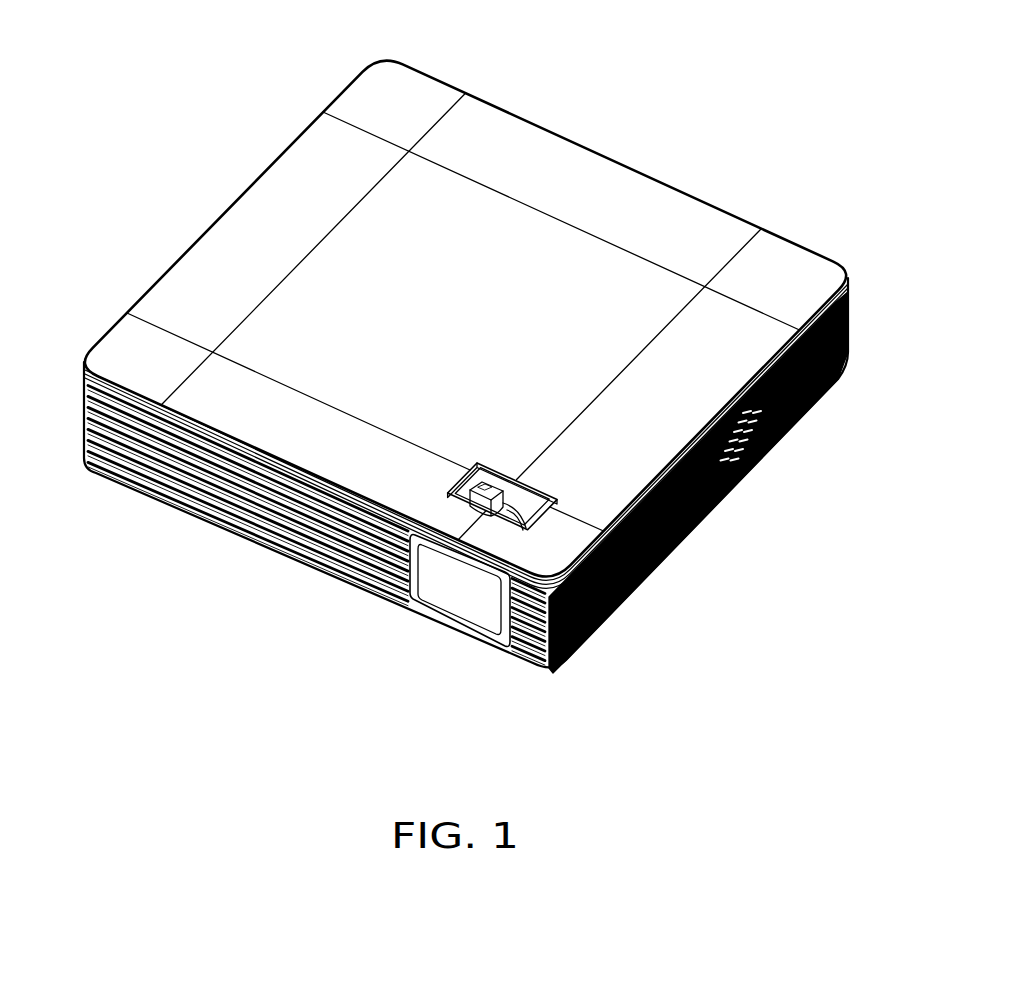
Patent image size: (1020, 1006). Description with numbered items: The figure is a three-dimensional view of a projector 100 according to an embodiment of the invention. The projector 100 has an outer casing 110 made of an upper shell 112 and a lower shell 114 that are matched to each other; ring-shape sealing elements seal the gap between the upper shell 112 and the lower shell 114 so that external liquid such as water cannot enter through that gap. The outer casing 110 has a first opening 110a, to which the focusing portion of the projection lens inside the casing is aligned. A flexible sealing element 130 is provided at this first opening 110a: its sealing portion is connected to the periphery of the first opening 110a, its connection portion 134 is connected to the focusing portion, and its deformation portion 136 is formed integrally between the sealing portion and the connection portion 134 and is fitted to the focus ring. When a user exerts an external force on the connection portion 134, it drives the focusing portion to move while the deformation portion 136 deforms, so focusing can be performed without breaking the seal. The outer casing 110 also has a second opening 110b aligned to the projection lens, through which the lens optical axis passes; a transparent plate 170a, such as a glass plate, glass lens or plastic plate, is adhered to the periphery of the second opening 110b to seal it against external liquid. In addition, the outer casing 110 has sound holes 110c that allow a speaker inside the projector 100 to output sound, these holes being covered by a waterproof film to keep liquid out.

The projector 100 is at (843, 33).
The outer casing 110 is at (607, 76).
The upper shell 112 is at (622, 185).
The lower shell 114 is at (780, 340).
The first opening 110a is at (457, 482).
The second opening 110b is at (430, 597).
The sound hole 110c is at (750, 466).
The flexible sealing element 130 is at (687, 540).
The connection portion 134 is at (527, 533).
The deformation portion 136 is at (528, 503).
The transparent plate 170a is at (487, 612).